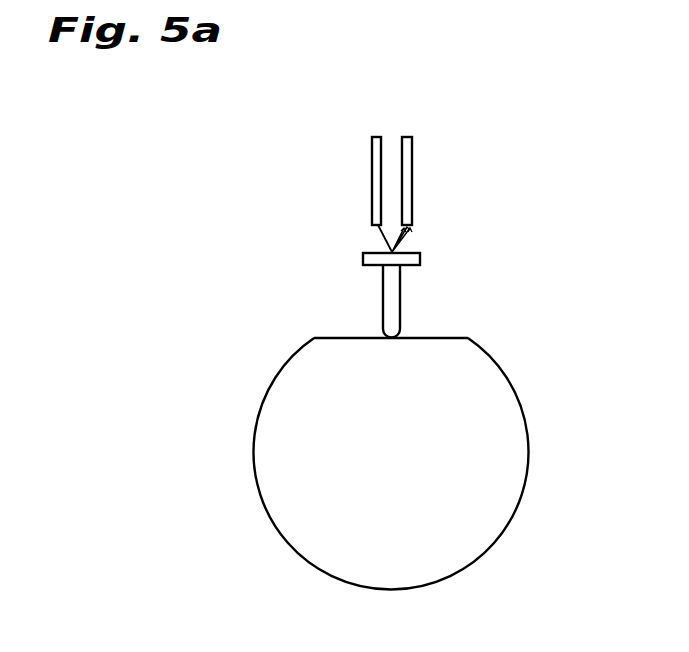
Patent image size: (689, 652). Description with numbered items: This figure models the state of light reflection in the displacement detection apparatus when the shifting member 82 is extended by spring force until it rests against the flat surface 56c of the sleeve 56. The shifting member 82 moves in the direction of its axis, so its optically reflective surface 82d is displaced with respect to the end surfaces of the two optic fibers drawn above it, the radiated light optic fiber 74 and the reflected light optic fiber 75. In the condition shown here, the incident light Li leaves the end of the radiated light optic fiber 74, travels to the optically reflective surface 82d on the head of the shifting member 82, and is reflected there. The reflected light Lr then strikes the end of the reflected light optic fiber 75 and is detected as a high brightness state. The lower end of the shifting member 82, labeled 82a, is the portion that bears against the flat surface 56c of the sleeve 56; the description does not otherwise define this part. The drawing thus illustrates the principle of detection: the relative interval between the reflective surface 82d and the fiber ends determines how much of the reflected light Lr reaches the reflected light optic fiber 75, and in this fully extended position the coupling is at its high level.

The radiated light optic fiber 74 is at (377, 137).
The reflected light optic fiber 75 is at (407, 137).
The incident light Li is at (368, 237).
The reflected light Lr is at (420, 230).
The optically reflective surface 82d is at (405, 250).
The shifting member 82 is at (441, 335).
The stem tip 82a is at (392, 338).
The flat surface 56c is at (338, 338).
The sleeve 56 is at (512, 457).